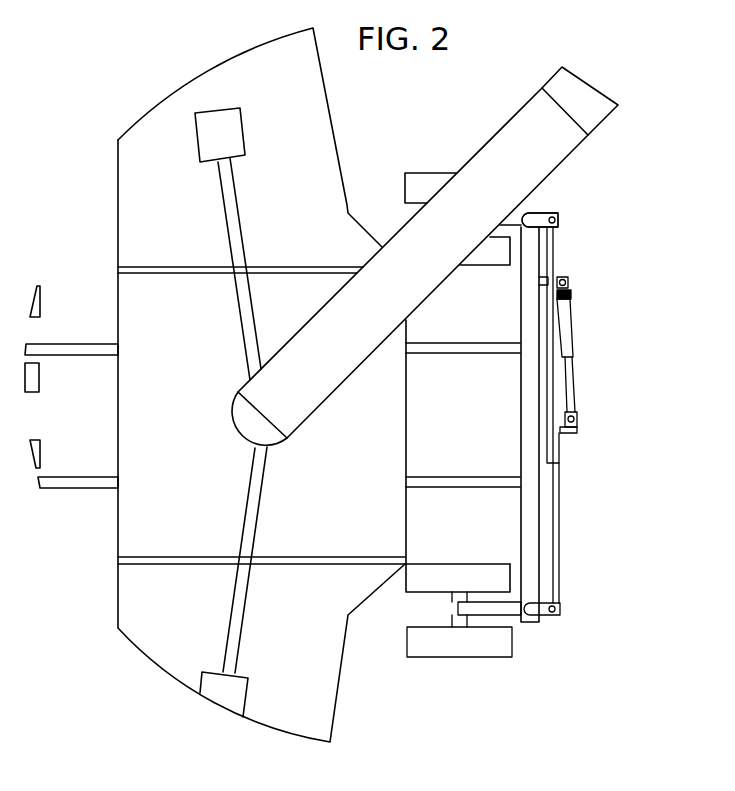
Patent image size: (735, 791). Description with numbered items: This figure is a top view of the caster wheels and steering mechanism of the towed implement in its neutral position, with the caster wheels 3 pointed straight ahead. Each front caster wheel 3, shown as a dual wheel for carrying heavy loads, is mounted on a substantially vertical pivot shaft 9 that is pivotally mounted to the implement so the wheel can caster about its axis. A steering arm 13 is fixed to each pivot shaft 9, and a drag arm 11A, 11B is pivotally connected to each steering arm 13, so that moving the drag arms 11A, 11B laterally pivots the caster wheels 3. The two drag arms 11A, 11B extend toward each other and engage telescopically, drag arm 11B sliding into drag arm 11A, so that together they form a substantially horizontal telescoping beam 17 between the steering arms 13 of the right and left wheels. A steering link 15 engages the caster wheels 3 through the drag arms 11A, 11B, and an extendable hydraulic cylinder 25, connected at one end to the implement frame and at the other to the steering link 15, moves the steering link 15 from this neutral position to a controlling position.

The front caster wheel 3 is at (408, 657).
The pivot shaft 9 is at (537, 213).
The drag arm 11A is at (560, 547).
The drag arm 11B is at (556, 230).
The steering arm 13 is at (557, 215).
The steering link 15 is at (560, 450).
The telescoping beam 17 is at (571, 294).
The hydraulic cylinder 25 is at (573, 326).